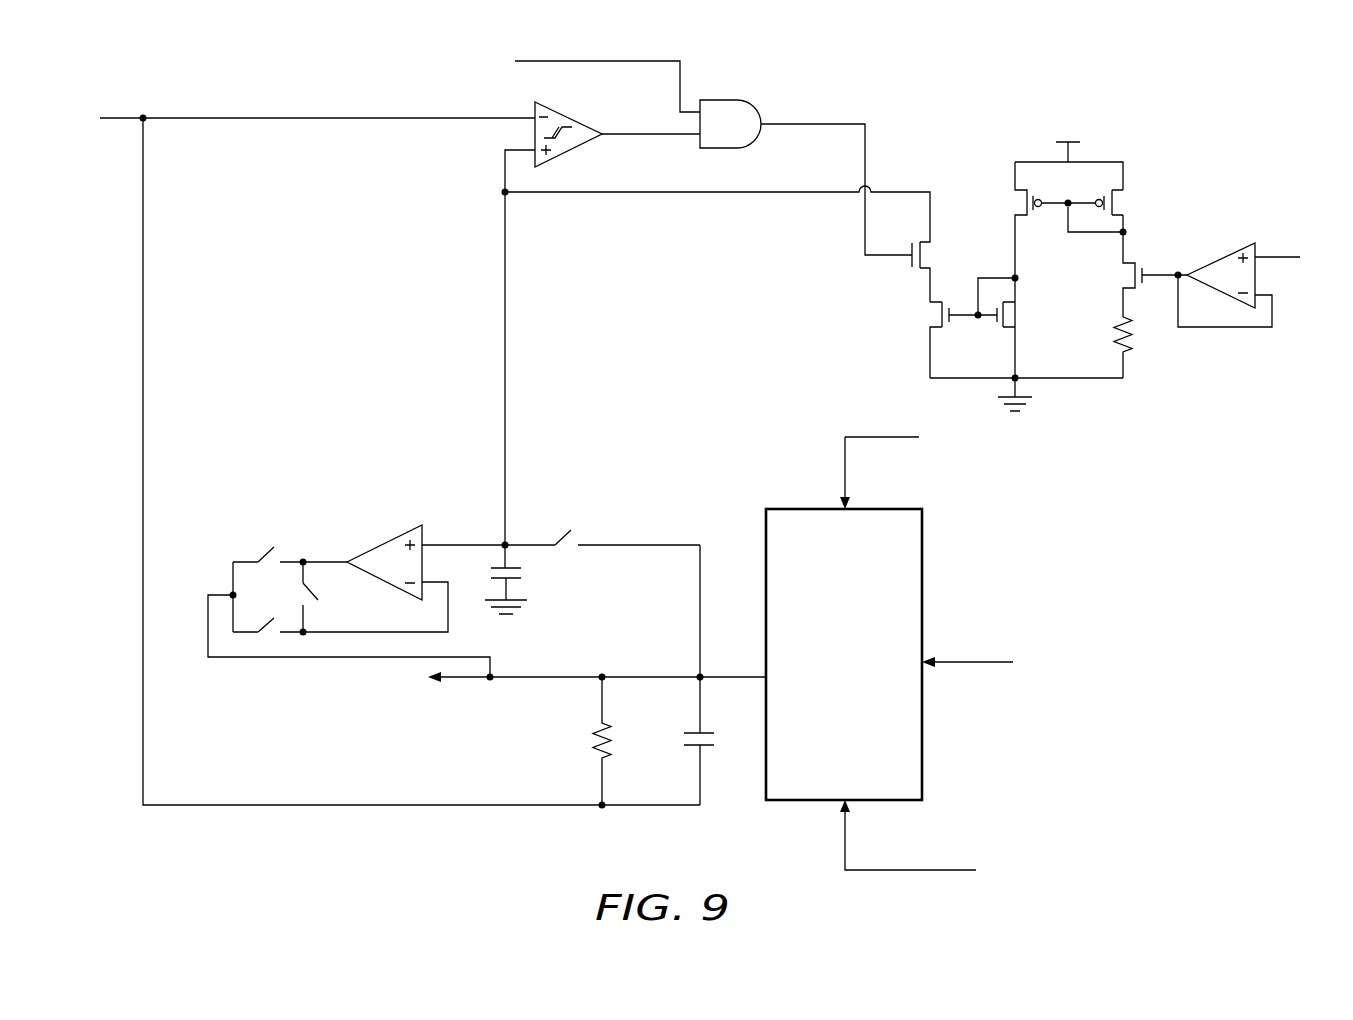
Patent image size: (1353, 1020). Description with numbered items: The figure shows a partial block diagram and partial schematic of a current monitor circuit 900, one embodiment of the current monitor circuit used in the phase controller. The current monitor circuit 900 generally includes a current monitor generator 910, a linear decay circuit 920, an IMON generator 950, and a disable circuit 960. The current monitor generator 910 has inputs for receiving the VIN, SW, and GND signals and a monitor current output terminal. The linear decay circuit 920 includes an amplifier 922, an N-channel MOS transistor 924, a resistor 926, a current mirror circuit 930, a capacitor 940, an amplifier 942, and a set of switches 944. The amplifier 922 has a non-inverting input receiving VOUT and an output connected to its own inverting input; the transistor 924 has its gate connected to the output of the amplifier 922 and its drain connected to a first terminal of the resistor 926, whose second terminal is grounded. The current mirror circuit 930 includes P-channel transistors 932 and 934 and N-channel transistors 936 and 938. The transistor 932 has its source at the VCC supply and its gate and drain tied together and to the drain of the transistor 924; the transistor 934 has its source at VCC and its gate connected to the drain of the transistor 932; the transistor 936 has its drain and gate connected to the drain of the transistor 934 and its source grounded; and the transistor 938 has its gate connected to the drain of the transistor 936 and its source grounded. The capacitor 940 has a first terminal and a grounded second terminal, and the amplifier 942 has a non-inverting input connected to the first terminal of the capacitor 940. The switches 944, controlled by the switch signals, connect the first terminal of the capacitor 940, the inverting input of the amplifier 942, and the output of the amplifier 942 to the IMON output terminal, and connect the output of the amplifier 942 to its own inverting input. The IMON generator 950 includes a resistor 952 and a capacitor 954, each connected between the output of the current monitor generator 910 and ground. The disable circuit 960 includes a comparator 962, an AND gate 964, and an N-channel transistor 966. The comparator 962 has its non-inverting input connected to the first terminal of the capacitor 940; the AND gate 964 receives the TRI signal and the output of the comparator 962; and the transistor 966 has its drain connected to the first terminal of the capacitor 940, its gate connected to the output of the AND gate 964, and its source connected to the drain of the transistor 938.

The current monitor circuit 900 is at (143, 65).
The current monitor generator 910 is at (788, 508).
The linear decay circuit 920 is at (1233, 118).
The amplifier 922 is at (1232, 253).
The N-channel MOS transistor 924 is at (1136, 260).
The resistor 926 is at (1134, 345).
The current mirror circuit 930 is at (1125, 165).
The P-channel transistor 932 is at (1110, 188).
The P-channel transistor 934 is at (1026, 218).
The N-channel transistor 936 is at (1012, 313).
The N-channel transistor 938 is at (938, 330).
The capacitor 940 is at (519, 580).
The amplifier 942 is at (381, 543).
The set of switches 944 is at (213, 577).
The IMON generator 950 is at (626, 665).
The resistor 952 is at (590, 754).
The capacitor 954 is at (714, 750).
The disable circuit 960 is at (467, 63).
The comparator 962 is at (582, 146).
The AND gate 964 is at (722, 149).
The N-channel transistor 966 is at (919, 270).